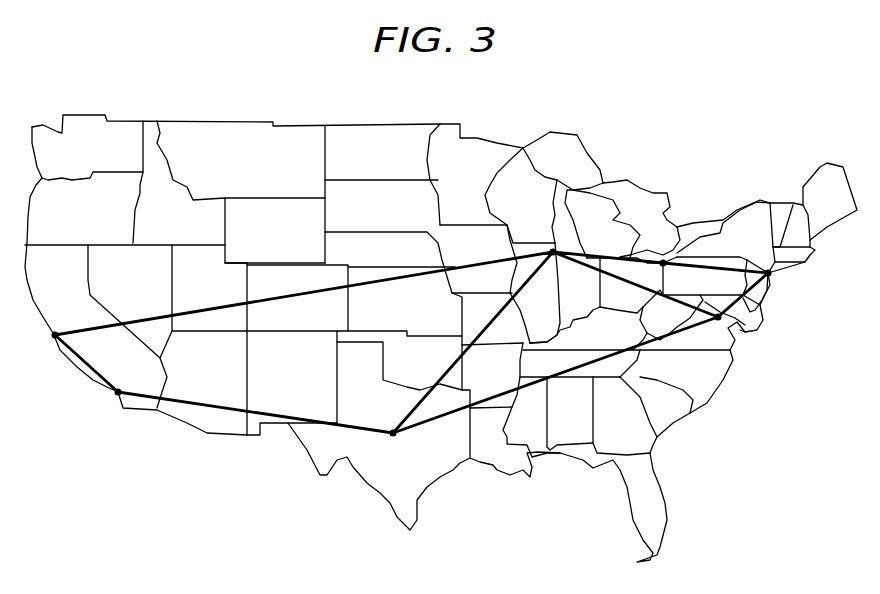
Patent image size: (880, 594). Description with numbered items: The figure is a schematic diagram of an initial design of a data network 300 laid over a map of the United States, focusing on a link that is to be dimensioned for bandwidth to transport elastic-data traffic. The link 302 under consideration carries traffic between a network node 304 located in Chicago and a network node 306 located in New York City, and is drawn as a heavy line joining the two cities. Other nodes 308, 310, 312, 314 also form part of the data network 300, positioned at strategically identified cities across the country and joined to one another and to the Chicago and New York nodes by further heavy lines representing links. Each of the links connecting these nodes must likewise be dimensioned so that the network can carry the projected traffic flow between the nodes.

The data network 300 is at (349, 240).
The link 302 is at (664, 262).
The network node 304 is at (553, 255).
The network node 306 is at (770, 277).
The node 308 is at (721, 321).
The node 310 is at (393, 436).
The node 312 is at (55, 338).
The node 314 is at (118, 395).